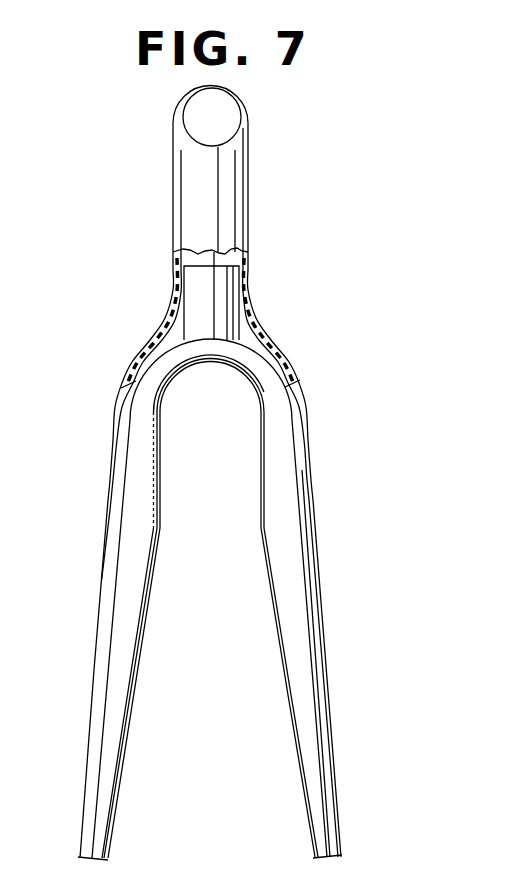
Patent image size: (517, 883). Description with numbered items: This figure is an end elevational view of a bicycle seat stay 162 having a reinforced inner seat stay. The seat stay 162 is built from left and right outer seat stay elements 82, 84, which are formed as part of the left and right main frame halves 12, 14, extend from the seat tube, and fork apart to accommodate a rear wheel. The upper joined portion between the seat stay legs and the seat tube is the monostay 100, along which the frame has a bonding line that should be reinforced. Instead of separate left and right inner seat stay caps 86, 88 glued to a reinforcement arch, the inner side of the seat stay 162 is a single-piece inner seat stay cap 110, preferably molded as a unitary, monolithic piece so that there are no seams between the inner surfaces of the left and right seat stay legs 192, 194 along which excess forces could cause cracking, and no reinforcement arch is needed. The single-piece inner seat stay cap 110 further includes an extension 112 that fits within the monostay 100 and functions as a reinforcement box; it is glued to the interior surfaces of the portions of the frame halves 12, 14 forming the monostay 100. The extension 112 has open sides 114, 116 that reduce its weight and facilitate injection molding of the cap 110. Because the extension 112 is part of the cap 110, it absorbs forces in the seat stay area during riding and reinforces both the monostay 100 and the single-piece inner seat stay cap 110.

The monostay 100 is at (237, 164).
The left frame half 12 is at (192, 258).
The right frame half 14 is at (235, 257).
The extension 112 is at (223, 289).
The open side 114 is at (185, 298).
The open side 116 is at (238, 312).
The seat stay 162 is at (122, 362).
The single-piece inner seat stay cap 110 is at (213, 368).
The left outer seat stay element 82 is at (112, 532).
The right outer seat stay element 84 is at (306, 505).
The left inner seat stay cap 86 is at (148, 530).
The right inner seat stay cap 88 is at (277, 581).
The left seat stay leg 192 is at (86, 670).
The right seat stay leg 194 is at (283, 695).